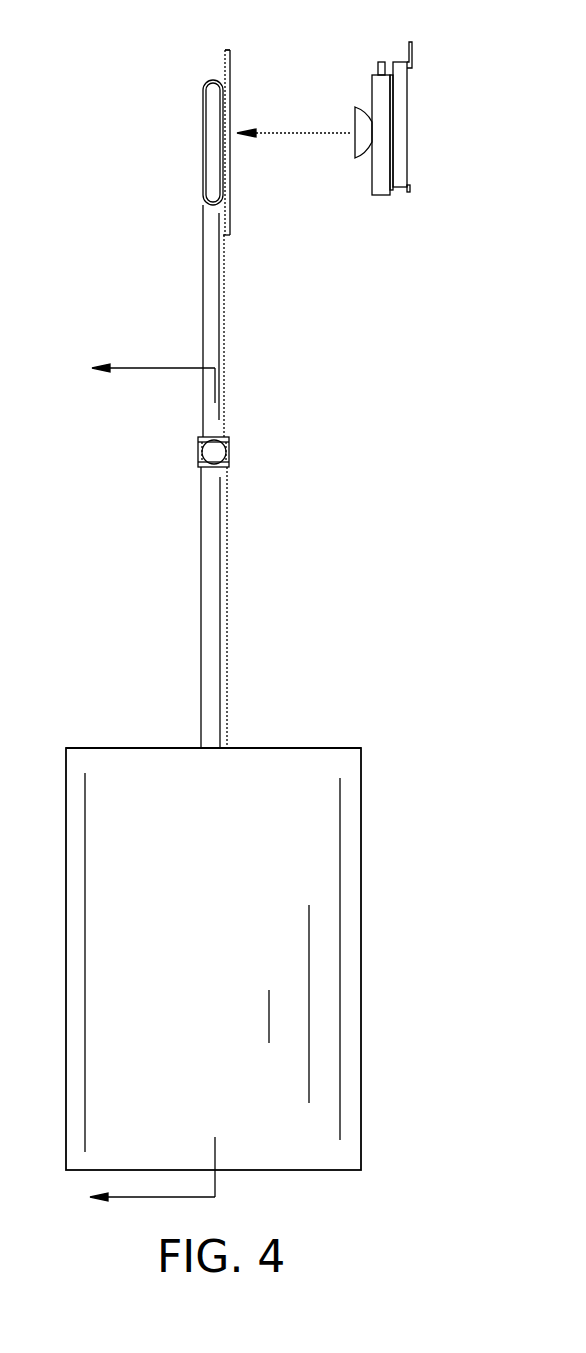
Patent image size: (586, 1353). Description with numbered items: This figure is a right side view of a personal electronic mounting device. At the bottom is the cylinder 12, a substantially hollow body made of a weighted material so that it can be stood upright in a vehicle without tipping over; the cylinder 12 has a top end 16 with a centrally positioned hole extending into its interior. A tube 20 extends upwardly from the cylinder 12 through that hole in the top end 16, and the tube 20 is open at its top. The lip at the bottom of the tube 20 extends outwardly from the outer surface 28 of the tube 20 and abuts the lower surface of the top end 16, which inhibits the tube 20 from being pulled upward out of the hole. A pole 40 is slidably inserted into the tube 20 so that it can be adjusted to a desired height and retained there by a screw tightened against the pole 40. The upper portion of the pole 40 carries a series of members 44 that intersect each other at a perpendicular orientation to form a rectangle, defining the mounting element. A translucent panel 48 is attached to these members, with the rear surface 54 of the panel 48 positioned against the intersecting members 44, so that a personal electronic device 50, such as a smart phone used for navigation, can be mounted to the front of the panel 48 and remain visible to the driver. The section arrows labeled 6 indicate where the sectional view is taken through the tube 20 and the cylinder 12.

The section line 6- 6 is at (127, 790).
The cylinder 12 is at (340, 716).
The top end 16 is at (143, 748).
The tube 20 is at (227, 606).
The outer surface 28 is at (215, 523).
The pole 40 is at (204, 293).
The series of members 44 is at (213, 127).
The panel 48 is at (230, 65).
The personal electronic device 50 is at (405, 128).
The rear surface 54 is at (223, 63).